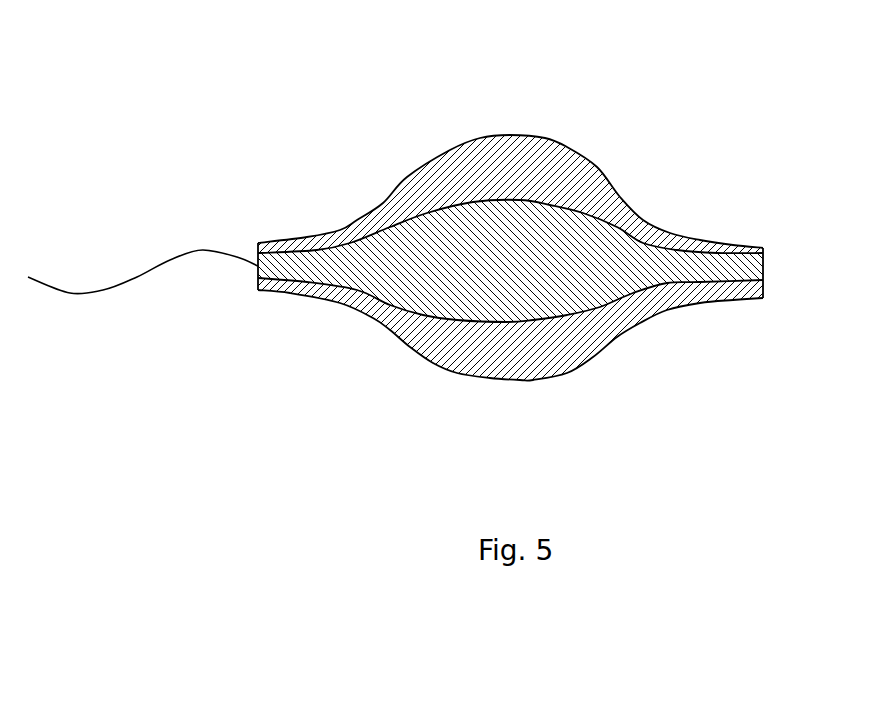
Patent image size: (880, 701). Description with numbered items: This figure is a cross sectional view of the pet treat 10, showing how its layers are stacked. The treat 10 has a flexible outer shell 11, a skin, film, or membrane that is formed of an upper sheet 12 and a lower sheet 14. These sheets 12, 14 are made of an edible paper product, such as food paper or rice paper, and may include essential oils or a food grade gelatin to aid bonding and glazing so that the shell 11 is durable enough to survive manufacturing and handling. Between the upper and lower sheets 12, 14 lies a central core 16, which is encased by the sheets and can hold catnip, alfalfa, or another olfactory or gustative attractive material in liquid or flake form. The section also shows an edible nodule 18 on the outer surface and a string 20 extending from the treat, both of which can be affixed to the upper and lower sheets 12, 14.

The treat 10 is at (283, 353).
The outer shell 11 is at (772, 228).
The upper sheet 12 is at (599, 178).
The lower sheet 14 is at (605, 346).
The central core 16 is at (388, 233).
The edible nodule 18 is at (477, 129).
The string 20 is at (164, 248).